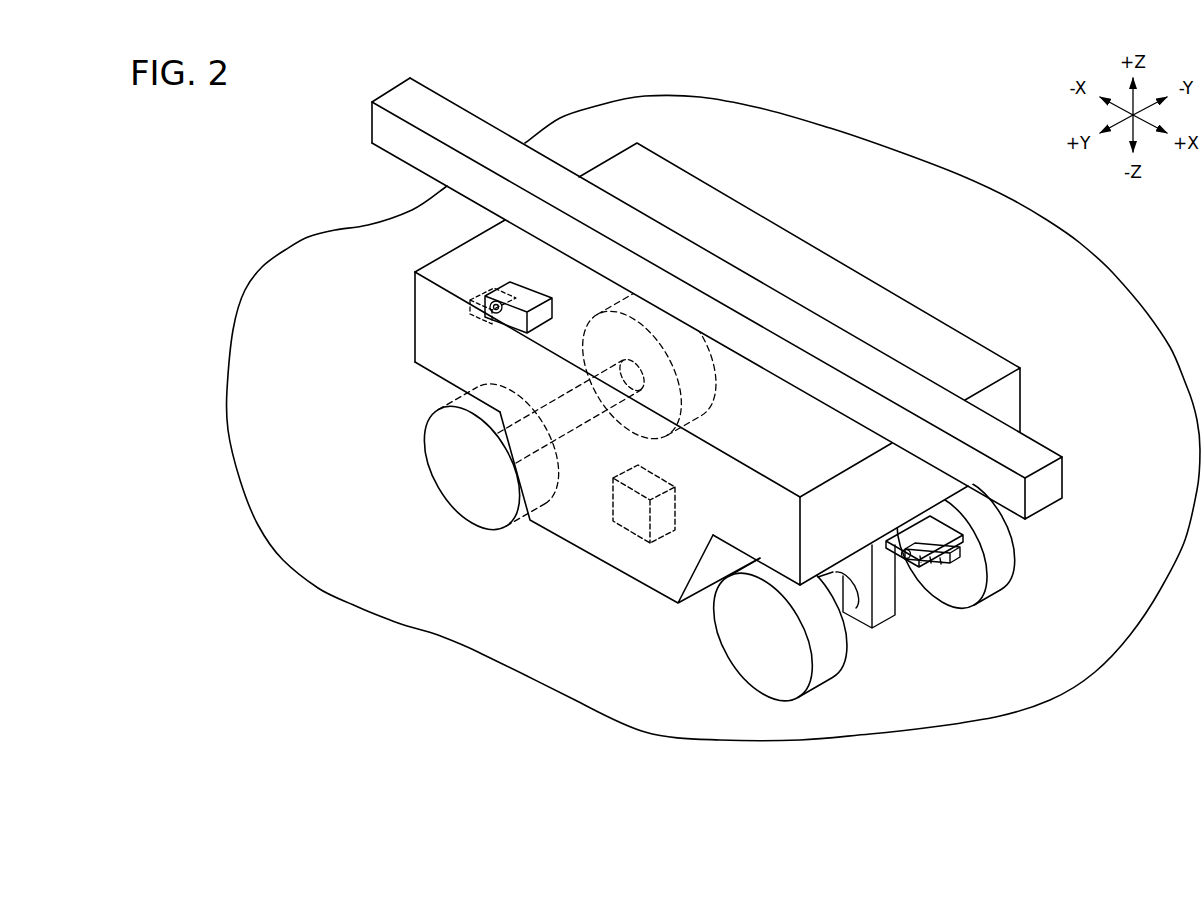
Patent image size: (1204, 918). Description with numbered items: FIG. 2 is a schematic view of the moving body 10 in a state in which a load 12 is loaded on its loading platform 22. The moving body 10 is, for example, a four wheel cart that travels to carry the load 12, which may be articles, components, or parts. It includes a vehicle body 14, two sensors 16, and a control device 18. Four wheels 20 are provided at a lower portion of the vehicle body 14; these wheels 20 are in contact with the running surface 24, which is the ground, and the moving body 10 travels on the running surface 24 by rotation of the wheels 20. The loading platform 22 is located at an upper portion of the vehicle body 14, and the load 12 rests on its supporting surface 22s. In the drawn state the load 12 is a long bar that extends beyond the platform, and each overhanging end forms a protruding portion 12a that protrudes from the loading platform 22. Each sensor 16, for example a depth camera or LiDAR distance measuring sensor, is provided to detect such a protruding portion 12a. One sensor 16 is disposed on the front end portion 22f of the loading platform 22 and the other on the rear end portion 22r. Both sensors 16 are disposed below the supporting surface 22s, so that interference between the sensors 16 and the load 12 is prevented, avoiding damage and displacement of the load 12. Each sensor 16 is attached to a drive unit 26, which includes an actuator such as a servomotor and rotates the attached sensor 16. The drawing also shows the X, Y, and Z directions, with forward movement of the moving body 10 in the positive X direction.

The moving body 10 is at (426, 245).
The load 12 is at (716, 287).
The protruding portion 12a is at (408, 97).
The vehicle body 14 is at (577, 502).
The sensor 16 is at (485, 290).
The control device 18 is at (656, 478).
The wheel 20 is at (452, 458).
The loading platform 22 is at (710, 364).
The front end portion 22f is at (1007, 411).
The rear end portion 22r is at (410, 310).
The supporting surface 22s is at (829, 283).
The running surface 24 is at (253, 323).
The drive unit 26 is at (526, 292).